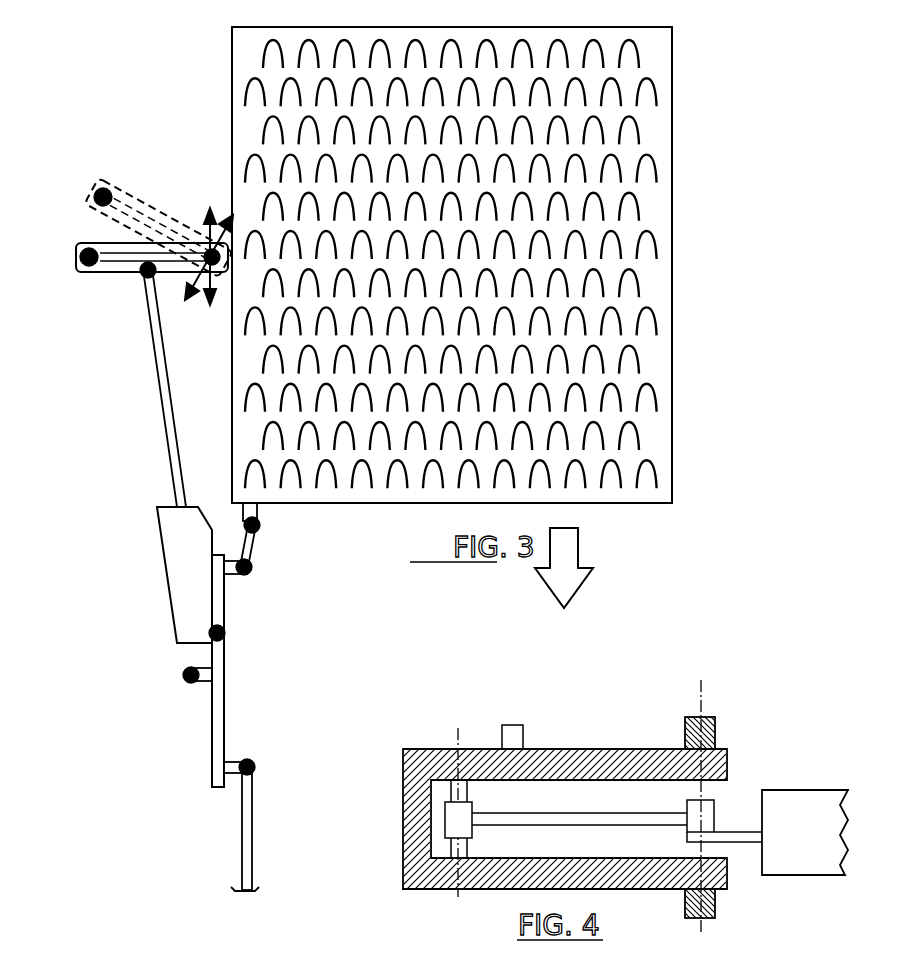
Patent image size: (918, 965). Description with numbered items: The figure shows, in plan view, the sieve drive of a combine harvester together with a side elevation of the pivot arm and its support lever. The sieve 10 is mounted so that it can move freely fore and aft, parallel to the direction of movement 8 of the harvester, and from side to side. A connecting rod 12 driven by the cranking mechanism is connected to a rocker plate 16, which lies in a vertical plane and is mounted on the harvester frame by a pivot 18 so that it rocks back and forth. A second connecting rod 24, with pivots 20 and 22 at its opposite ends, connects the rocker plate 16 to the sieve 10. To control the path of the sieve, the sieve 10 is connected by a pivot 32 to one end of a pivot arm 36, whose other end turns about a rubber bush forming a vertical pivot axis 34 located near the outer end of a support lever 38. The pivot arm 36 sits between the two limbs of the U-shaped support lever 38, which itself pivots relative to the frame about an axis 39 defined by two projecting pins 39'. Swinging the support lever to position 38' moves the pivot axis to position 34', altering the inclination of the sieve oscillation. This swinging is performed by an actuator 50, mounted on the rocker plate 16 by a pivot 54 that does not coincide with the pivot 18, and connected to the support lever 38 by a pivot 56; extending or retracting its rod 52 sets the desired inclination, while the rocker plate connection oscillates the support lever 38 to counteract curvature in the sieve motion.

In FIG. 3, the direction of movement 8 is at (578, 545).
In FIG. 4, the sieve 10 is at (787, 805).
In FIG. 3, the connecting rod 12 is at (242, 822).
In FIG. 3, the rocker plate 16 is at (212, 727).
In FIG. 3, the pivot 18 is at (182, 674).
In FIG. 3, the pivot 20 is at (251, 572).
In FIG. 3, the pivot 22 is at (262, 525).
In FIG. 3, the second connecting rod 24 is at (255, 550).
In FIG. 3, the pivot 32 is at (205, 247).
In FIG. 4, the pivot 32 is at (715, 800).
In FIG. 3, the vertical pivot axis 34 is at (69, 231).
In FIG. 4, the vertical pivot axis 34 is at (437, 796).
In FIG. 3, the pivot axis position 34' is at (93, 163).
In FIG. 3, the pivot arm 36 is at (110, 262).
In FIG. 4, the pivot arm 36 is at (615, 813).
In FIG. 3, the support lever 38 is at (150, 298).
In FIG. 4, the support lever 38 is at (565, 792).
In FIG. 3, the support lever position 38' is at (159, 210).
In FIG. 4, the axis 39 is at (733, 799).
In FIG. 4, the projecting pins 39' is at (771, 801).
In FIG. 3, the actuator 50 is at (158, 515).
In FIG. 3, the rod 52 is at (162, 428).
In FIG. 3, the pivot 54 is at (225, 637).
In FIG. 3, the pivot 56 is at (143, 280).
In FIG. 4, the pivot 56 is at (520, 727).